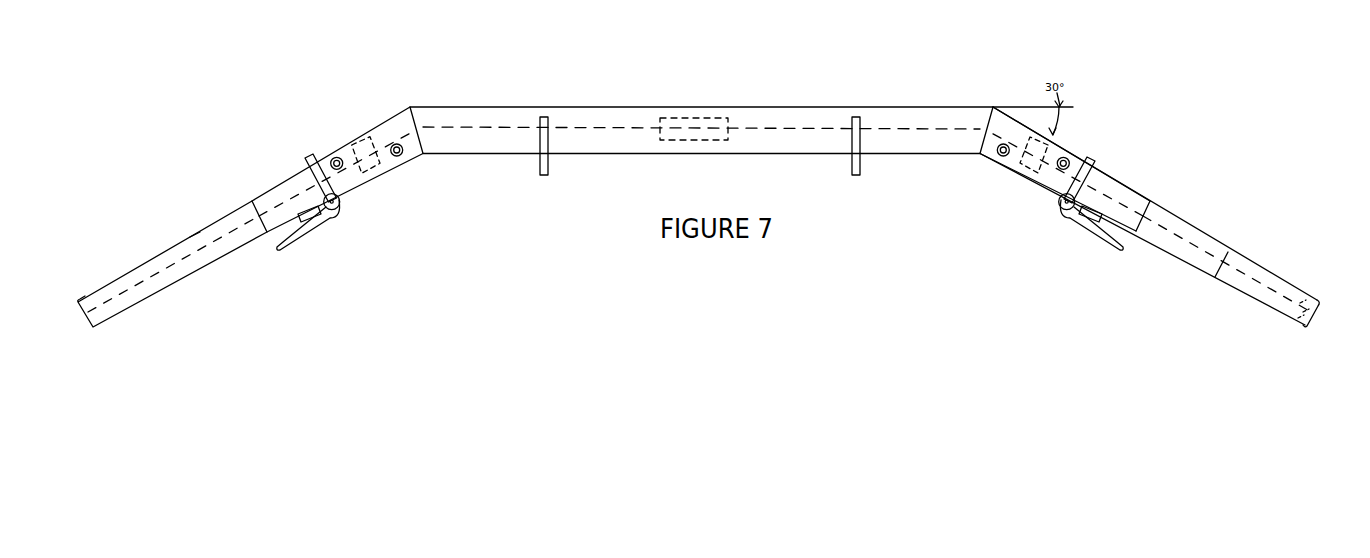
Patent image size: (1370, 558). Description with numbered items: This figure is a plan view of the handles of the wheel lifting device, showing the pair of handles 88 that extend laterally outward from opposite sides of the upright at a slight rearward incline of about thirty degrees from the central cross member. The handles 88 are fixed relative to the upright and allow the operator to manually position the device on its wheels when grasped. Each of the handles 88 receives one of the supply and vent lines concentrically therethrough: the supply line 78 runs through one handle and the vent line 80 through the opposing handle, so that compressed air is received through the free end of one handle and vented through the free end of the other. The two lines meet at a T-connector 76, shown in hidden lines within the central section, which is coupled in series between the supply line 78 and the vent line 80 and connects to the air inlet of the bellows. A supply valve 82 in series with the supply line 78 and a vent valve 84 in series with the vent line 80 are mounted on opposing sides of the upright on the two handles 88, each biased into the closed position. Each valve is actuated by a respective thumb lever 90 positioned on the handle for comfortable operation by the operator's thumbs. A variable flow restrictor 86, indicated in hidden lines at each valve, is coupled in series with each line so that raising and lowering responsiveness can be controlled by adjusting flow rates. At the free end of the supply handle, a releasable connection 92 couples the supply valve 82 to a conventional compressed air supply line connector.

The T-connector 76 is at (687, 118).
The supply line 78 is at (1177, 237).
The vent line 80 is at (148, 275).
The supply valve 82 is at (1107, 177).
The vent valve 84 is at (312, 224).
The variable flow restrictor 86 is at (378, 173).
The handles 88 is at (195, 243).
The thumb lever 90 is at (290, 246).
The releasable connection 92 is at (1296, 330).